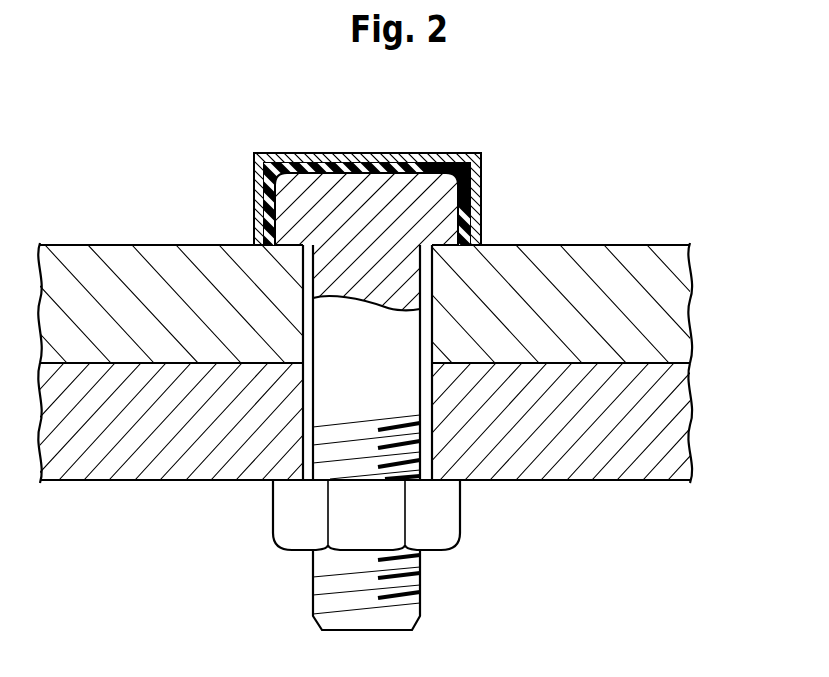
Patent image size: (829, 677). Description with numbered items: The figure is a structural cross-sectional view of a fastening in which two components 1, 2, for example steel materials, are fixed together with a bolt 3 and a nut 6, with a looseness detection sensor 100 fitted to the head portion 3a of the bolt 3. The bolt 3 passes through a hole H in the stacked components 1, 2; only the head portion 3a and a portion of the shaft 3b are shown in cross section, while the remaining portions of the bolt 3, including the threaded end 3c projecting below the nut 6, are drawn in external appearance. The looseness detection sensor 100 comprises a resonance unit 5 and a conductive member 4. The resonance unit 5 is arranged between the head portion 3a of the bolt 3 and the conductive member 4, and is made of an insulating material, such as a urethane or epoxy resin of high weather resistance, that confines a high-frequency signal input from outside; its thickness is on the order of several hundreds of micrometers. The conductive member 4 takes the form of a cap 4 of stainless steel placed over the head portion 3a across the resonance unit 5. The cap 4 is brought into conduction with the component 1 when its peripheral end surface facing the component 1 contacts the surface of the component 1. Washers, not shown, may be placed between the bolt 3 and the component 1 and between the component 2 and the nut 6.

The looseness detection sensor 100 is at (238, 133).
The component 1 is at (683, 303).
The component 2 is at (683, 422).
The bolt 3 is at (361, 372).
The head portion 3a is at (264, 226).
The shaft 3b is at (303, 311).
The threaded portion 3c is at (424, 583).
The conductive member 4 is at (310, 152).
The resonance unit 5 is at (362, 165).
The nut 6 is at (447, 512).
The through hole H is at (427, 276).